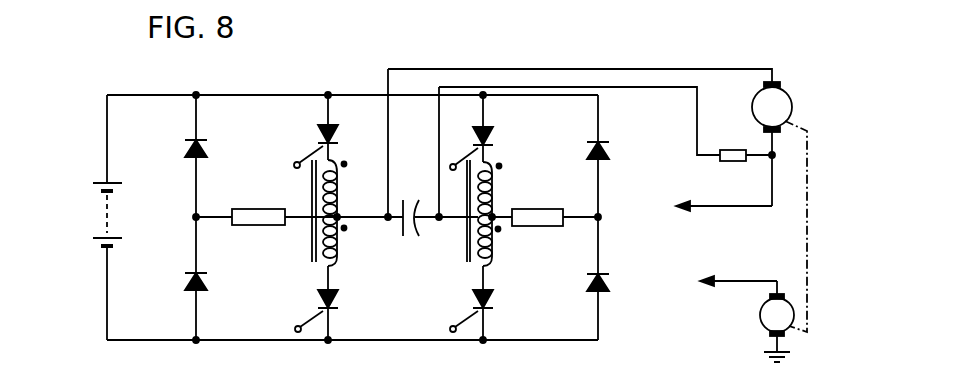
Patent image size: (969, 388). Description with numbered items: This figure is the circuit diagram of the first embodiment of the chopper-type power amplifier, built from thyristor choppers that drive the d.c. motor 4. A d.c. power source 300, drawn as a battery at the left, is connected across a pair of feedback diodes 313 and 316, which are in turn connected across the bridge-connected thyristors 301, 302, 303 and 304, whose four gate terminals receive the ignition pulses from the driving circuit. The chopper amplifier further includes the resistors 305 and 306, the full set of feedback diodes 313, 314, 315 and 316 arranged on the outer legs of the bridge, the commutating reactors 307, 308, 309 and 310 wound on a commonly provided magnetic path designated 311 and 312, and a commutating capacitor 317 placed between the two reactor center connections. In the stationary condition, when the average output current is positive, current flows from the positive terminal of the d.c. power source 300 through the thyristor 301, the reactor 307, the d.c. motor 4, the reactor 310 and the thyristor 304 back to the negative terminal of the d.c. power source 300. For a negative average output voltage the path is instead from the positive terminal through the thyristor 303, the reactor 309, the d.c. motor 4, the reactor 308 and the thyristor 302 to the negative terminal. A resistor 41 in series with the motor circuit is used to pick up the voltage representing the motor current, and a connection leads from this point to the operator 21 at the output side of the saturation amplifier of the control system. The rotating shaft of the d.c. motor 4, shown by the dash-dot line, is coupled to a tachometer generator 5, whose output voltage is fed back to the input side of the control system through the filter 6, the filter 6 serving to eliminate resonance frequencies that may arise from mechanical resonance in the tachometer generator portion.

The d.c. power source 300 is at (102, 214).
The feedback diode 313 is at (208, 146).
The feedback diode 314 is at (207, 285).
The resistor 305 is at (255, 226).
The resistor 306 is at (548, 226).
The thyristor 301 is at (338, 130).
The thyristor 302 is at (340, 302).
The thyristor 303 is at (495, 132).
The thyristor 304 is at (470, 300).
The magnetic path 311 is at (312, 195).
The magnetic path 312 is at (464, 240).
The commutating reactor 307 is at (337, 197).
The commutating reactor 308 is at (337, 253).
The commutating reactor 309 is at (495, 184).
The commutating reactor 310 is at (492, 255).
The commutating capacitor 317 is at (412, 201).
The feedback diode 315 is at (609, 151).
The feedback diode 316 is at (609, 283).
The resistor 41 is at (733, 150).
The d.c. motor 4 is at (792, 100).
The tachometer generator 5 is at (760, 318).
The operator 21 is at (704, 195).
The filter 6 is at (724, 270).